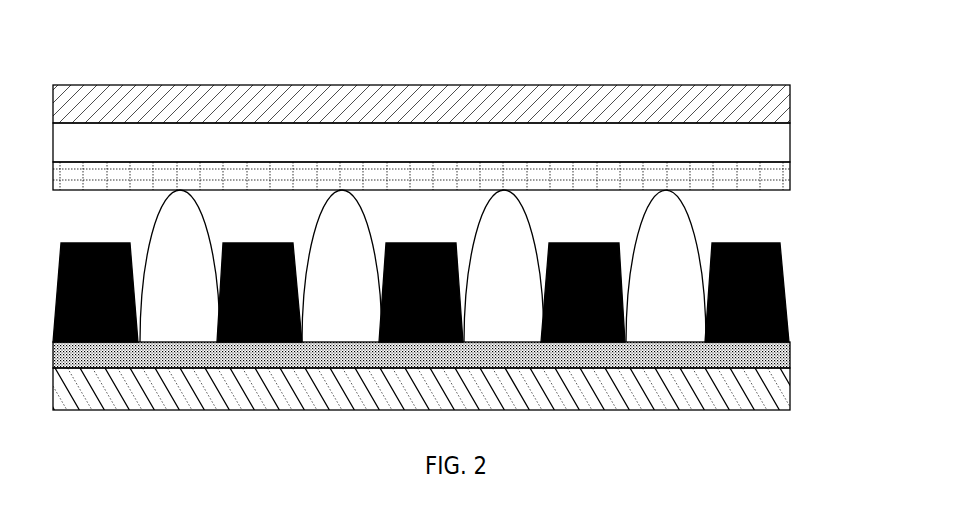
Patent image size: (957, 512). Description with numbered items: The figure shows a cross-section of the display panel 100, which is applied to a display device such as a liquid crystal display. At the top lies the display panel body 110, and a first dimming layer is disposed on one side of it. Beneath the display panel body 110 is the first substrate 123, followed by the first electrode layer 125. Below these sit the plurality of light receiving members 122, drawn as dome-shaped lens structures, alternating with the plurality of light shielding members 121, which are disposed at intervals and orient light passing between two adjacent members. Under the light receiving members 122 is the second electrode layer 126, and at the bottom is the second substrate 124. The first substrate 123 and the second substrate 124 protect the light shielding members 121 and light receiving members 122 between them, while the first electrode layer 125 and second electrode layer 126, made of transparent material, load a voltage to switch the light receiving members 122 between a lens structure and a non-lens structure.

The display panel 100 is at (93, 44).
The display panel body 110 is at (688, 103).
The first substrate 123 is at (767, 140).
The first electrode layer 125 is at (773, 180).
The light receiving members 122 is at (683, 240).
The light shielding members 121 is at (784, 287).
The second electrode layer 126 is at (769, 357).
The second substrate 124 is at (768, 393).